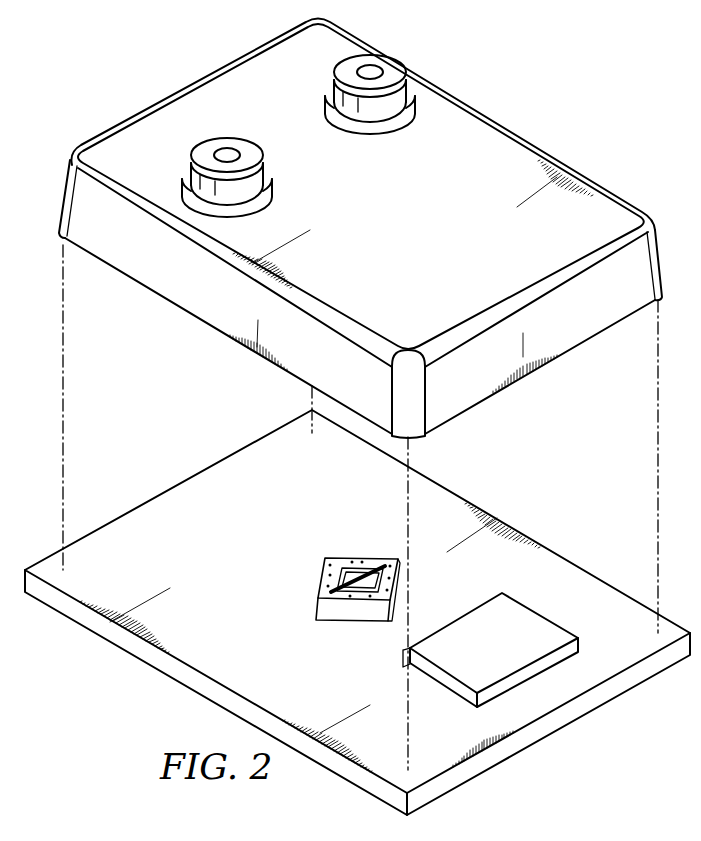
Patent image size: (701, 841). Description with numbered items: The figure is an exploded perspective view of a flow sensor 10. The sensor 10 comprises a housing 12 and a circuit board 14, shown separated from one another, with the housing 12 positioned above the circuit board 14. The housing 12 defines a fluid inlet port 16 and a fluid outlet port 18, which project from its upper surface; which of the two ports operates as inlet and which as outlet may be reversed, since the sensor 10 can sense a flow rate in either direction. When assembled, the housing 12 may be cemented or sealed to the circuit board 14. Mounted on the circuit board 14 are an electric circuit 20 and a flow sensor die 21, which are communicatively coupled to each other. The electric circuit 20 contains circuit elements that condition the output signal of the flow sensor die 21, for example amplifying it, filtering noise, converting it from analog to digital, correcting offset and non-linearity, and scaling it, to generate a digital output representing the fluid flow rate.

The sensor 10 is at (577, 121).
The housing 12 is at (434, 248).
The circuit board 14 is at (221, 585).
The fluid inlet port 16 is at (385, 67).
The fluid outlet port 18 is at (207, 150).
The electric circuit 20 is at (517, 620).
The flow sensor die 21 is at (325, 577).